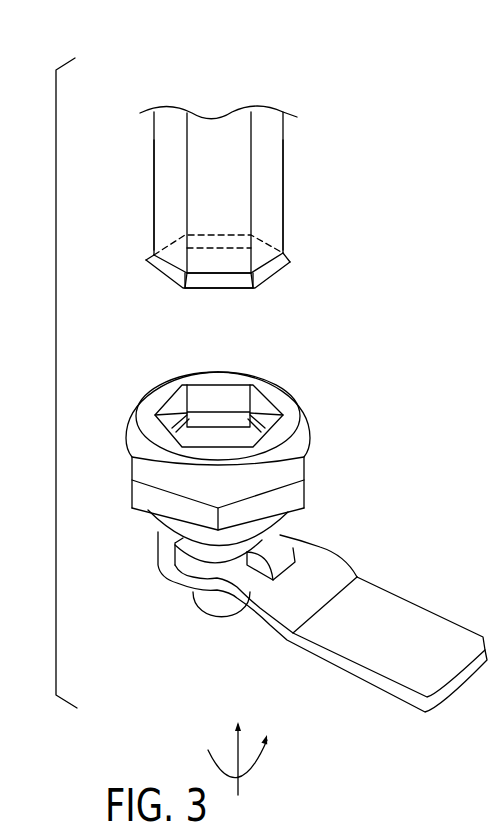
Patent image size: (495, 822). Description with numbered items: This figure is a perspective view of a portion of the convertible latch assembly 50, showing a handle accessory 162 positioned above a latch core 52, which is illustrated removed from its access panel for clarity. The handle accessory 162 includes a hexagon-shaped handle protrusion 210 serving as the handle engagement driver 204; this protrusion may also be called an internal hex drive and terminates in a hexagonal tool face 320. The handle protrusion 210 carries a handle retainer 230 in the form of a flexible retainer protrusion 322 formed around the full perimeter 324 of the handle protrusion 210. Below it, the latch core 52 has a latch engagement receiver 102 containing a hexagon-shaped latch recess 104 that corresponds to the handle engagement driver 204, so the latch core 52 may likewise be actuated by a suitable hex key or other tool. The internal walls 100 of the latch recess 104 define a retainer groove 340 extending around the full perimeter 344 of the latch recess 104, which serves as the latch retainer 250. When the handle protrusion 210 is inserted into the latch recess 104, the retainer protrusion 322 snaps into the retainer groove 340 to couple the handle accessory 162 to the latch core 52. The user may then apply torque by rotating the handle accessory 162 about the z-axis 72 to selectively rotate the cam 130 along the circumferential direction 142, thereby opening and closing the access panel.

The convertible latch assembly 50 is at (158, 70).
The handle accessory 162 is at (232, 92).
The handle engagement driver 204 is at (173, 195).
The handle protrusion 210 is at (127, 210).
The handle retainer 230 is at (292, 246).
The retainer protrusion 322 is at (273, 273).
The hexagonal tool face 320 is at (220, 268).
The full perimeter 324 is at (217, 240).
The internal walls 100 is at (215, 397).
The latch retainer 250 is at (172, 408).
The retainer groove 340 is at (262, 395).
The full perimeter 344 is at (284, 417).
The latch engagement receiver 102 is at (266, 435).
The latch recess 104 is at (290, 383).
The latch core 52 is at (160, 623).
The cam 130 is at (387, 693).
The z-axis 72 is at (234, 731).
The circumferential direction 142 is at (258, 765).